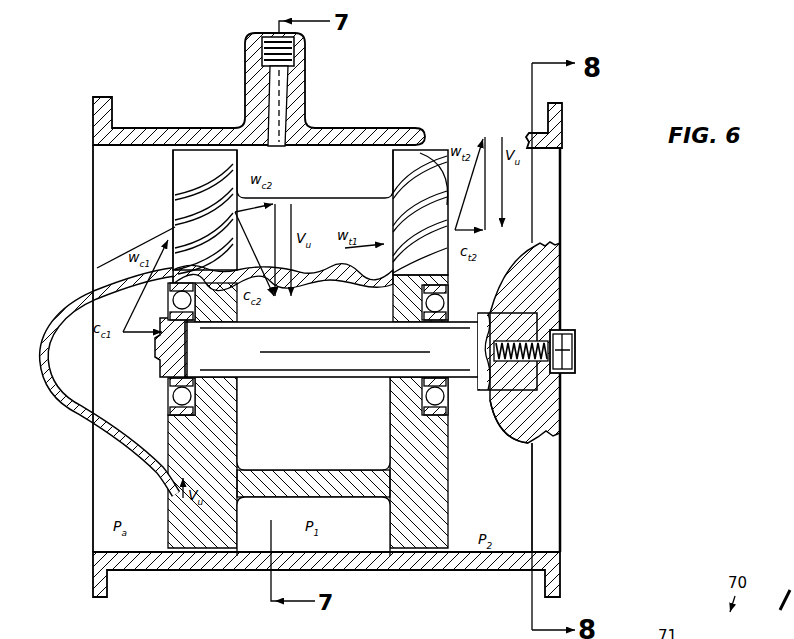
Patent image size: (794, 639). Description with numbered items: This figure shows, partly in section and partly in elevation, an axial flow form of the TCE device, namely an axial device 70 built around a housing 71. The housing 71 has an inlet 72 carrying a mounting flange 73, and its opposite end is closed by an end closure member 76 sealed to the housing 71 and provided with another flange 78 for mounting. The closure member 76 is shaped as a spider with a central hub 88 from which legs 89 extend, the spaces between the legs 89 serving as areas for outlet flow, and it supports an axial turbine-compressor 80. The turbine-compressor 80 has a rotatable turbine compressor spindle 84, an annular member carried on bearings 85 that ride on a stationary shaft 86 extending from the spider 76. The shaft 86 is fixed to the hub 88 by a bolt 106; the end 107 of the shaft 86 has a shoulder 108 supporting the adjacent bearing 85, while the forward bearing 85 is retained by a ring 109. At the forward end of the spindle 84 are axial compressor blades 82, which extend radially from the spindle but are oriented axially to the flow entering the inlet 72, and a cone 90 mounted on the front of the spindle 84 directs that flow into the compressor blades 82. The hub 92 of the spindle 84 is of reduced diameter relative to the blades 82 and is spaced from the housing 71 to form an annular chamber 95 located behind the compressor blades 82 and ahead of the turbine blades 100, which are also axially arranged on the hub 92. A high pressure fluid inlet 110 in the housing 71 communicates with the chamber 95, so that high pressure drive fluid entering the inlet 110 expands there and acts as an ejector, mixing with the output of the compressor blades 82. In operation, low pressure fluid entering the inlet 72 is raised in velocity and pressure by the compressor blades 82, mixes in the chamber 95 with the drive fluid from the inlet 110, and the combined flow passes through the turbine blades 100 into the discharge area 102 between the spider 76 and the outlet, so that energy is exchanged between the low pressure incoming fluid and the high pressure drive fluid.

The axial device 70 is at (203, 100).
The housing 71 is at (150, 128).
The inlet 72 is at (100, 213).
The mounting flange 73 is at (95, 580).
The end closure member 76 is at (549, 216).
The flange 78 is at (555, 126).
The axial turbine-compressor 80 is at (266, 507).
The axial compressor blades 82 is at (168, 215).
The turbine compressor spindle 84 is at (318, 470).
The bearings 85 is at (170, 398).
The stationary shaft 86 is at (292, 378).
The central hub 88 is at (502, 414).
The legs 89 is at (545, 193).
The cone 90 is at (97, 268).
The hub 92 is at (250, 470).
The chamber 95 is at (352, 194).
The turbine blades 100 is at (443, 160).
The discharge area 102 is at (508, 518).
The bolt 106 is at (578, 354).
The end of the shaft 107 is at (463, 313).
The shoulder 108 is at (432, 337).
The ring 109 is at (160, 350).
The high pressure fluid inlet 110 is at (298, 55).